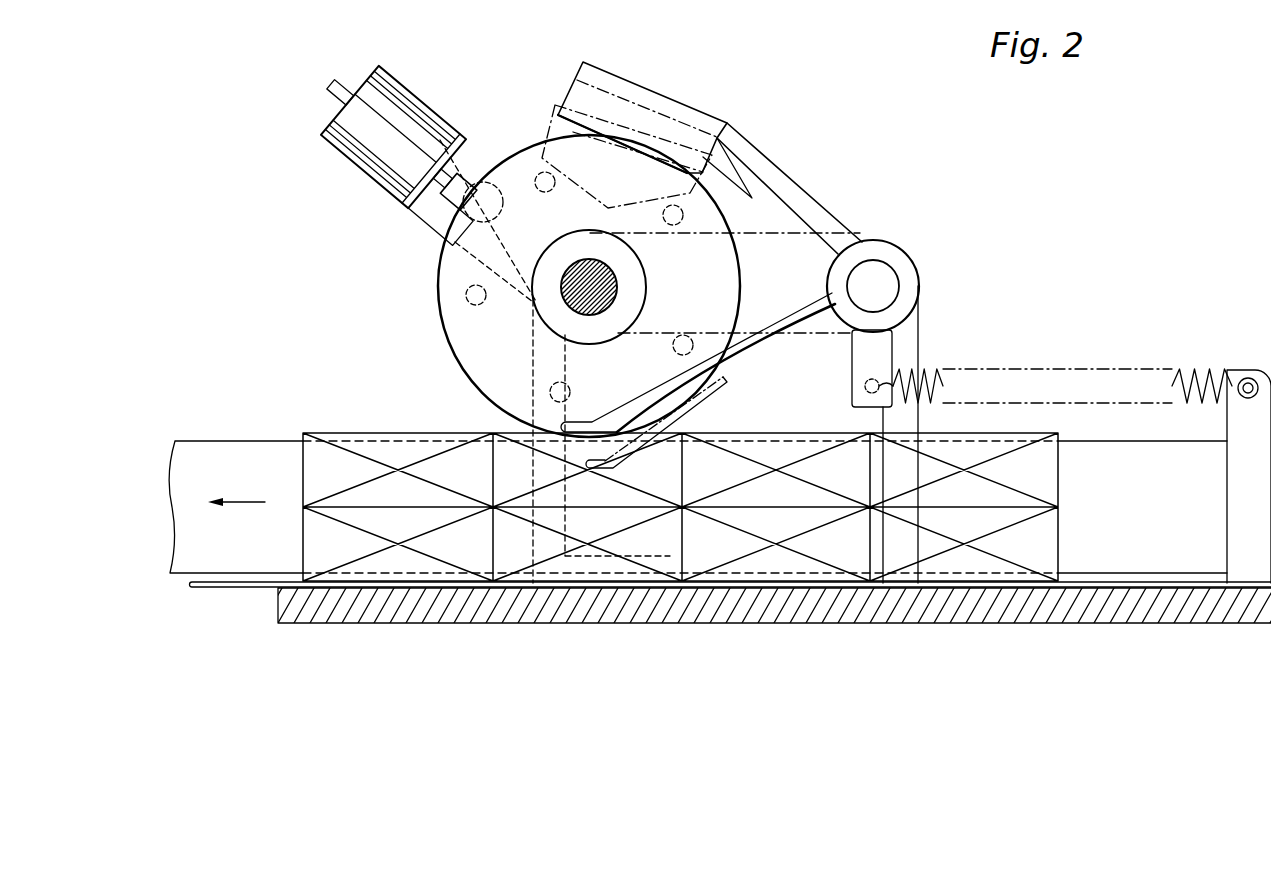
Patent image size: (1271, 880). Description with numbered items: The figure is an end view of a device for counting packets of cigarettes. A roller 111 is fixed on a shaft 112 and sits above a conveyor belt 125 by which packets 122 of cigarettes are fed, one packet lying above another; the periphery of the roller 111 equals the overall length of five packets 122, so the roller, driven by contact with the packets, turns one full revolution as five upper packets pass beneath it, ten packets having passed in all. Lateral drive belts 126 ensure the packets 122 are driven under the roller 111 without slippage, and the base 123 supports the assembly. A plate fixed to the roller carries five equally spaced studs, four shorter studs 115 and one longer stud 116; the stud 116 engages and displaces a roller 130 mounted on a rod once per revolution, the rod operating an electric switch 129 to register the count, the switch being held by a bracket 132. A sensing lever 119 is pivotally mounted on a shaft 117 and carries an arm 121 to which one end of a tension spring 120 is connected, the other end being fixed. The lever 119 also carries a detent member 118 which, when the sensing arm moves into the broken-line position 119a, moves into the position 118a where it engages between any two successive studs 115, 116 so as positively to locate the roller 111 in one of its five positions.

The roller 111 is at (492, 372).
The shaft 112 is at (587, 300).
The studs 115 is at (468, 291).
The stud 116 is at (690, 352).
The shaft 117 is at (880, 278).
The detent member 118 is at (617, 113).
The position of detent member 118a is at (562, 132).
The sensing lever 119 is at (688, 378).
The position of sensing arm 119a is at (600, 469).
The tension spring 120 is at (1190, 371).
The arm 121 is at (868, 355).
The packets 122 is at (475, 545).
The base 123 is at (736, 605).
The conveyor belt 125 is at (238, 590).
The lateral drive belts 126 is at (267, 450).
The electric switch 129 is at (375, 137).
The roller 130 is at (467, 221).
The motor bracket 132 is at (433, 211).